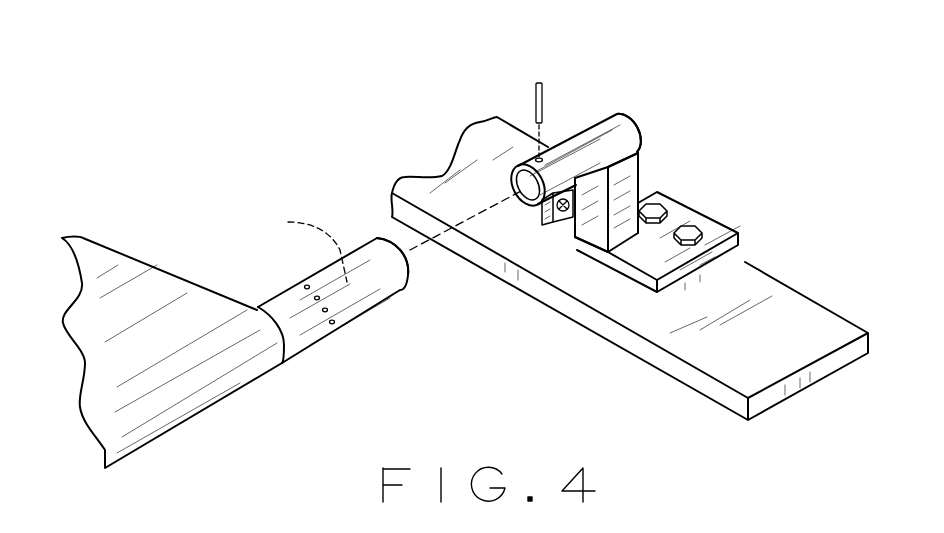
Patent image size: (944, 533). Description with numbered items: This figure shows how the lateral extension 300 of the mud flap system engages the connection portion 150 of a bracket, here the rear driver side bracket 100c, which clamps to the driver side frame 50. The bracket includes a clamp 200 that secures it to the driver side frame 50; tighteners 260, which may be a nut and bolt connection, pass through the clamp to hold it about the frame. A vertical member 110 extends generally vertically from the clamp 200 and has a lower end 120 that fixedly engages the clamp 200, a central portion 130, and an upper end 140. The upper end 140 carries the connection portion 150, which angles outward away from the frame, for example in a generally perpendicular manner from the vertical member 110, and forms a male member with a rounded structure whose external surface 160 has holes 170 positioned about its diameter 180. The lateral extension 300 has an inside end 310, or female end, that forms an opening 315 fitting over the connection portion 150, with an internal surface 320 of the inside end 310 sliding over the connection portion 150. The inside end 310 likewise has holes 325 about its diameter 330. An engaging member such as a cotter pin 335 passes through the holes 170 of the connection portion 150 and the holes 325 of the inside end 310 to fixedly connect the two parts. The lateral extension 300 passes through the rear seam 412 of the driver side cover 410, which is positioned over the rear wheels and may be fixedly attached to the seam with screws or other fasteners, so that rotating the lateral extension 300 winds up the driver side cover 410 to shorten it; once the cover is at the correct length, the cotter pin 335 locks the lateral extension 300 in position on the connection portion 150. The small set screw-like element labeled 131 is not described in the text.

The driver side frame 50 is at (808, 322).
The rear driver side bracket 100c is at (618, 127).
The vertical member 110 is at (627, 200).
The lower end 120 is at (620, 238).
The central portion 130 is at (650, 180).
The set screw 131 is at (557, 220).
The upper end 140 is at (628, 182).
The connection portion 150 is at (593, 133).
The external surface 160 is at (571, 130).
The holes 170 is at (537, 158).
The diameter 180 is at (528, 205).
The clamp 200 is at (697, 205).
The tighteners 260 is at (733, 225).
The lateral extension 300 is at (367, 307).
The inside end 310 is at (409, 282).
The opening 315 is at (385, 240).
The internal surface 320 is at (296, 246).
The holes 325 is at (330, 322).
The diameter 330 is at (347, 317).
The cotter pin 335 is at (540, 80).
The driver side cover 410 is at (118, 273).
The rear seam 412 is at (230, 385).